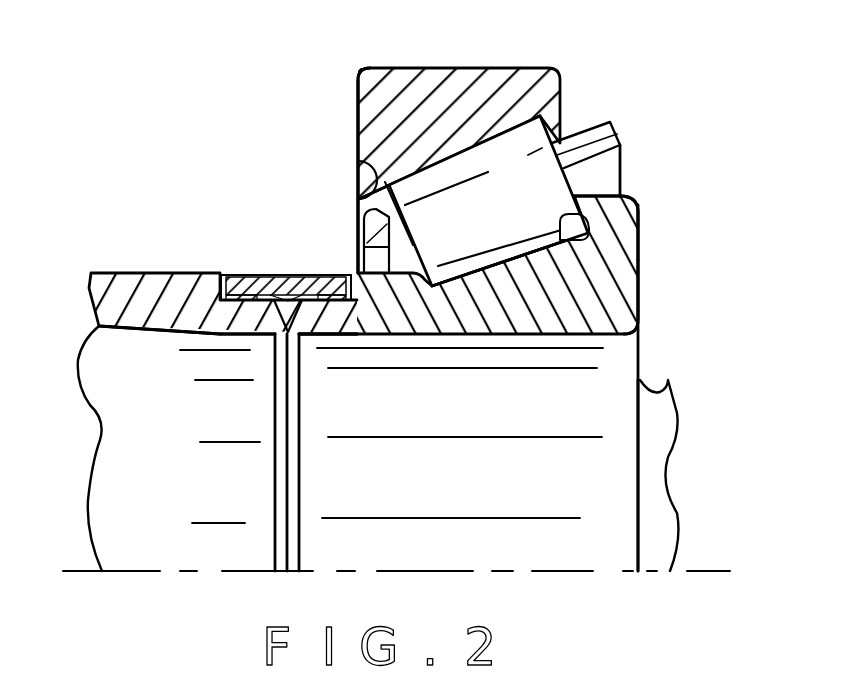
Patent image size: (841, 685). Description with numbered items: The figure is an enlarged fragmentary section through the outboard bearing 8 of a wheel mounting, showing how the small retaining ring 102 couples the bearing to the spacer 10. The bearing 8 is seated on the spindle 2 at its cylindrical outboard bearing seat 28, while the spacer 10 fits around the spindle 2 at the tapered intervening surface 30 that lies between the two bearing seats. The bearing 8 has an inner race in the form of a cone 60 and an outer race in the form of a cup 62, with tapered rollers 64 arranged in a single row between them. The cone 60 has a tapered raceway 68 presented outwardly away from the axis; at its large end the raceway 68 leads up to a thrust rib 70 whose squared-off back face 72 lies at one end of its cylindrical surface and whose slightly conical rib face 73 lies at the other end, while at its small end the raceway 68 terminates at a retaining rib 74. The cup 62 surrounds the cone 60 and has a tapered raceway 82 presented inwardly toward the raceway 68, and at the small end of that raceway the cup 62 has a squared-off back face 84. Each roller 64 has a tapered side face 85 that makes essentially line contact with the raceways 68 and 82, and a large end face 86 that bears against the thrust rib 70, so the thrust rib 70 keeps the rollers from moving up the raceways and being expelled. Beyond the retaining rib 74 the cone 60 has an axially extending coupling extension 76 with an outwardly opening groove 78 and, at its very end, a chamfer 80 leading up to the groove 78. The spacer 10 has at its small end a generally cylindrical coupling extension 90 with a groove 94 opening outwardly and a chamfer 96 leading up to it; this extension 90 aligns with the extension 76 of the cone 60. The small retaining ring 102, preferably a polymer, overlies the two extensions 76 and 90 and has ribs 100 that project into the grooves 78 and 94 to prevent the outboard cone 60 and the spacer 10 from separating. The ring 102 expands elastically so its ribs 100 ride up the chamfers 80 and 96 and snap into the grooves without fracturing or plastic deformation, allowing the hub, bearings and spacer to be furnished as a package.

The spindle 2 is at (676, 440).
The outboard bearing 8 is at (322, 92).
The spacer 10 is at (146, 262).
The outboard bearing seat 28 is at (618, 498).
The intervening surface 30 is at (140, 488).
The cone 60 is at (433, 332).
The cup 62 is at (536, 88).
The tapered rollers 64 is at (432, 252).
The tapered raceway 68 is at (507, 252).
The thrust rib 70 is at (622, 240).
The back face 72 is at (638, 278).
The rib face 73 is at (563, 262).
The retaining rib 74 is at (372, 185).
The coupling extension 76 is at (318, 330).
The groove 78 is at (341, 268).
The chamfer 80 is at (291, 270).
The tapered raceway 82 is at (468, 165).
The back face 84 is at (336, 90).
The tapered side face 85 is at (431, 168).
The large end face 86 is at (555, 103).
The coupling extension 90 is at (251, 325).
The groove 94 is at (224, 272).
The chamfer 96 is at (243, 270).
The ribs 100 is at (225, 322).
The small retaining ring 102 is at (228, 270).